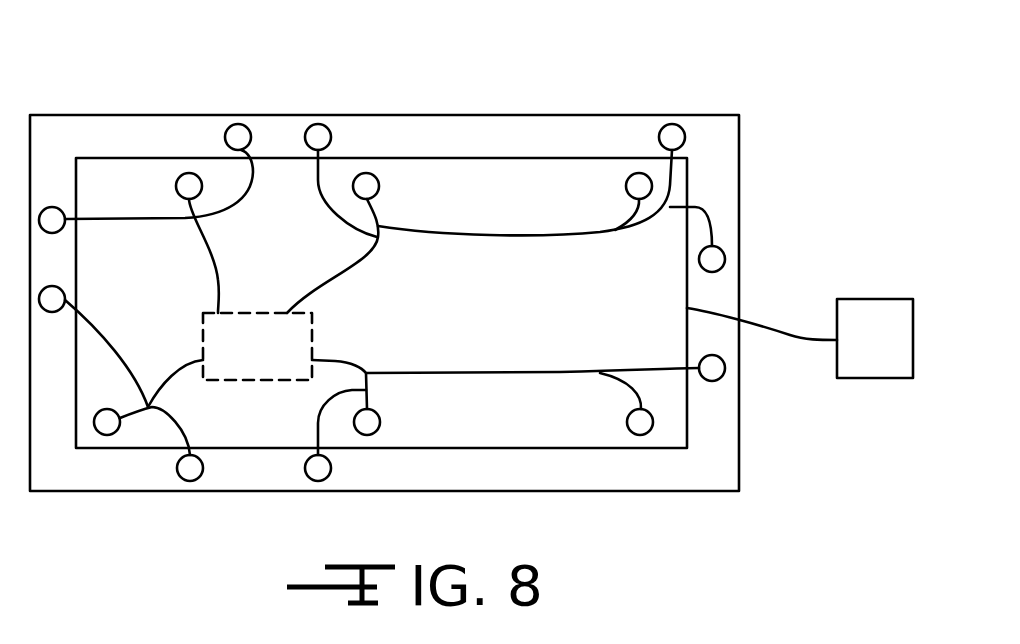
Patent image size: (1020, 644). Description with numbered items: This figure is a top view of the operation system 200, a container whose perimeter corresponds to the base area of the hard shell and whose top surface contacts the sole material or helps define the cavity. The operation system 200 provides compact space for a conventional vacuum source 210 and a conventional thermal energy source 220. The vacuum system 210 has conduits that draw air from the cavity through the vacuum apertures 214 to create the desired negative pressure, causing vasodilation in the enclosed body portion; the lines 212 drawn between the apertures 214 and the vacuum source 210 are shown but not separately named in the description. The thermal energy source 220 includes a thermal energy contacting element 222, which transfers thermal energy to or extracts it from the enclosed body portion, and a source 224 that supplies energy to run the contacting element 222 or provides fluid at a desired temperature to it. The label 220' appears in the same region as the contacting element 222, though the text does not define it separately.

The operation system 200 is at (601, 97).
The vacuum source 210 is at (257, 346).
The conductive trace 212 is at (320, 178).
The vacuum apertures 214 is at (313, 124).
The routing layer region 220' is at (381, 303).
The thermal energy contacting element 222 is at (381, 303).
The thermal energy source 220 is at (800, 338).
The source 224 is at (800, 338).